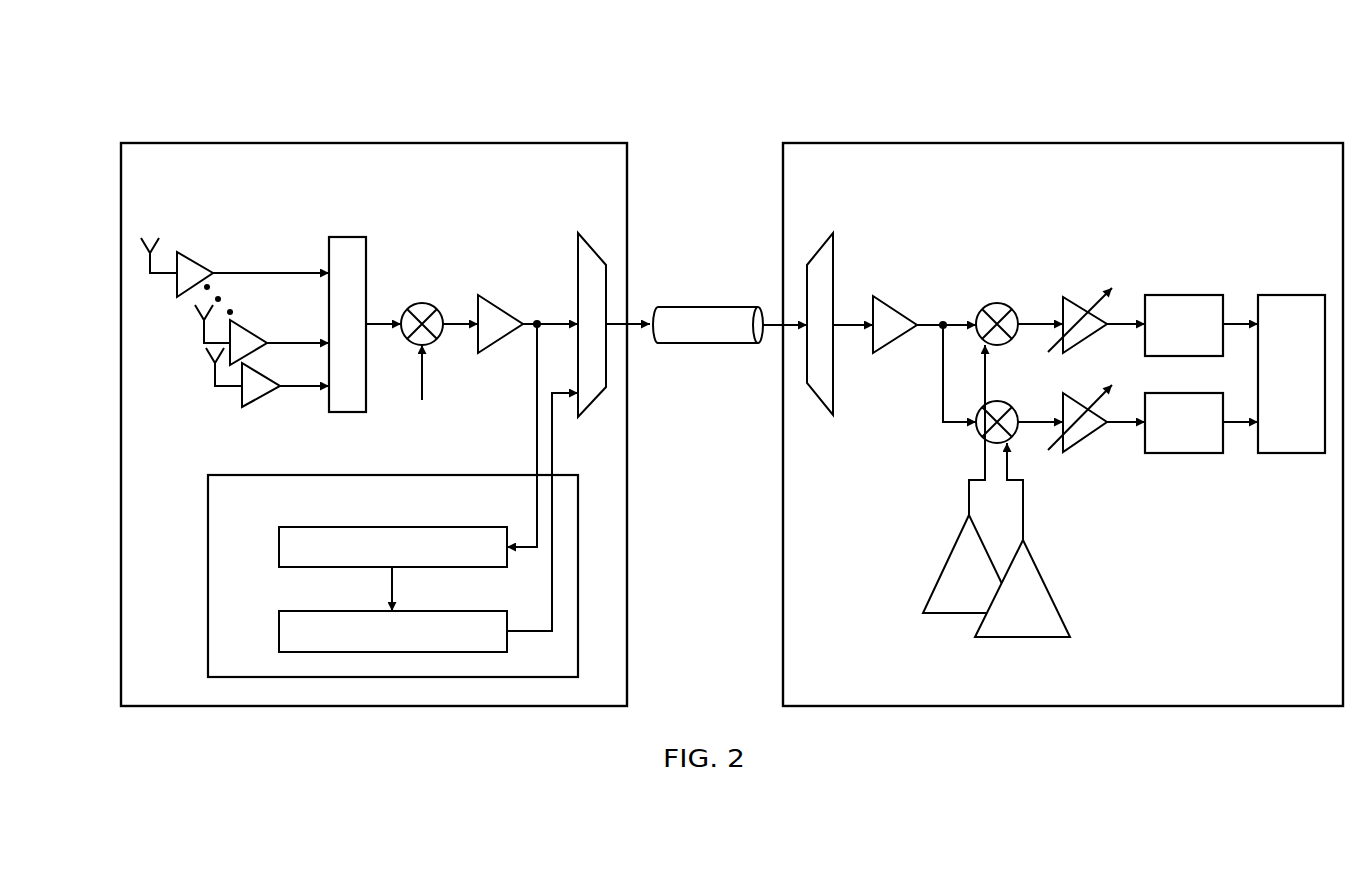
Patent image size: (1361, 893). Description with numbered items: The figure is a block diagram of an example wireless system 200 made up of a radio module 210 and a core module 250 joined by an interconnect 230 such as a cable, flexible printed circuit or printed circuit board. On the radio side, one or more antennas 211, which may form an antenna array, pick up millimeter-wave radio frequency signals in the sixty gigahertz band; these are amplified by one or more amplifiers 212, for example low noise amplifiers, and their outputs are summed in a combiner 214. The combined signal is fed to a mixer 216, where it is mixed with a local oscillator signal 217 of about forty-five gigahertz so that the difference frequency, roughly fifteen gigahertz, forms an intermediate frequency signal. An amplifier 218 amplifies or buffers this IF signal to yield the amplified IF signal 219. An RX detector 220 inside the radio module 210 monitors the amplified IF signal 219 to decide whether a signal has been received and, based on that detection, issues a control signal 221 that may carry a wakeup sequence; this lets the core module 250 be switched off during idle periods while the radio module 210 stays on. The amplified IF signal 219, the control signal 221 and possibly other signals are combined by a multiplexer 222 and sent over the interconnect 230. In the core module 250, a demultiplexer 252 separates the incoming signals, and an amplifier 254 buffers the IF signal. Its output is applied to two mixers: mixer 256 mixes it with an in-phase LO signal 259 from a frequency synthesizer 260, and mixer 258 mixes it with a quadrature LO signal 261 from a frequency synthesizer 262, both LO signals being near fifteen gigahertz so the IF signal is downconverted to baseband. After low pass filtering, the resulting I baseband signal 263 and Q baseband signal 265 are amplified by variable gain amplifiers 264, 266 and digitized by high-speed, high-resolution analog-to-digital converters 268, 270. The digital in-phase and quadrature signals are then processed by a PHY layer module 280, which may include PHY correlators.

The system 200 is at (201, 80).
The radio module 210 is at (377, 143).
The antennas 211 is at (180, 330).
The amplifiers 212 is at (242, 397).
The combiner 214 is at (348, 237).
The mixer 216 is at (420, 303).
The local oscillator signal 217 is at (421, 390).
The amplifier 218 is at (495, 300).
The amplified IF signal 219 is at (540, 321).
The RX detector 220 is at (398, 475).
The control signal 221 is at (553, 450).
The multiplexer 222 is at (578, 253).
The interconnect 230 is at (697, 307).
The core module 250 is at (1055, 143).
The demultiplexer 252 is at (833, 250).
The amplifier 254 is at (887, 300).
The mixer 256 is at (996, 303).
The mixer 258 is at (977, 432).
The in-phase LO signal 259 is at (969, 497).
The frequency synthesizer 260 is at (940, 613).
The quadrature LO signal 261 is at (1023, 512).
The frequency synthesizer 262 is at (1045, 637).
The I baseband signal 263 is at (1032, 322).
The variable gain amplifier 264 is at (1090, 335).
The Q baseband signal 265 is at (1032, 420).
The variable gain amplifier 266 is at (1090, 433).
The analog-to-digital converter 268 is at (1177, 295).
The analog-to-digital converter 270 is at (1177, 393).
The PHY layer module 280 is at (1282, 295).